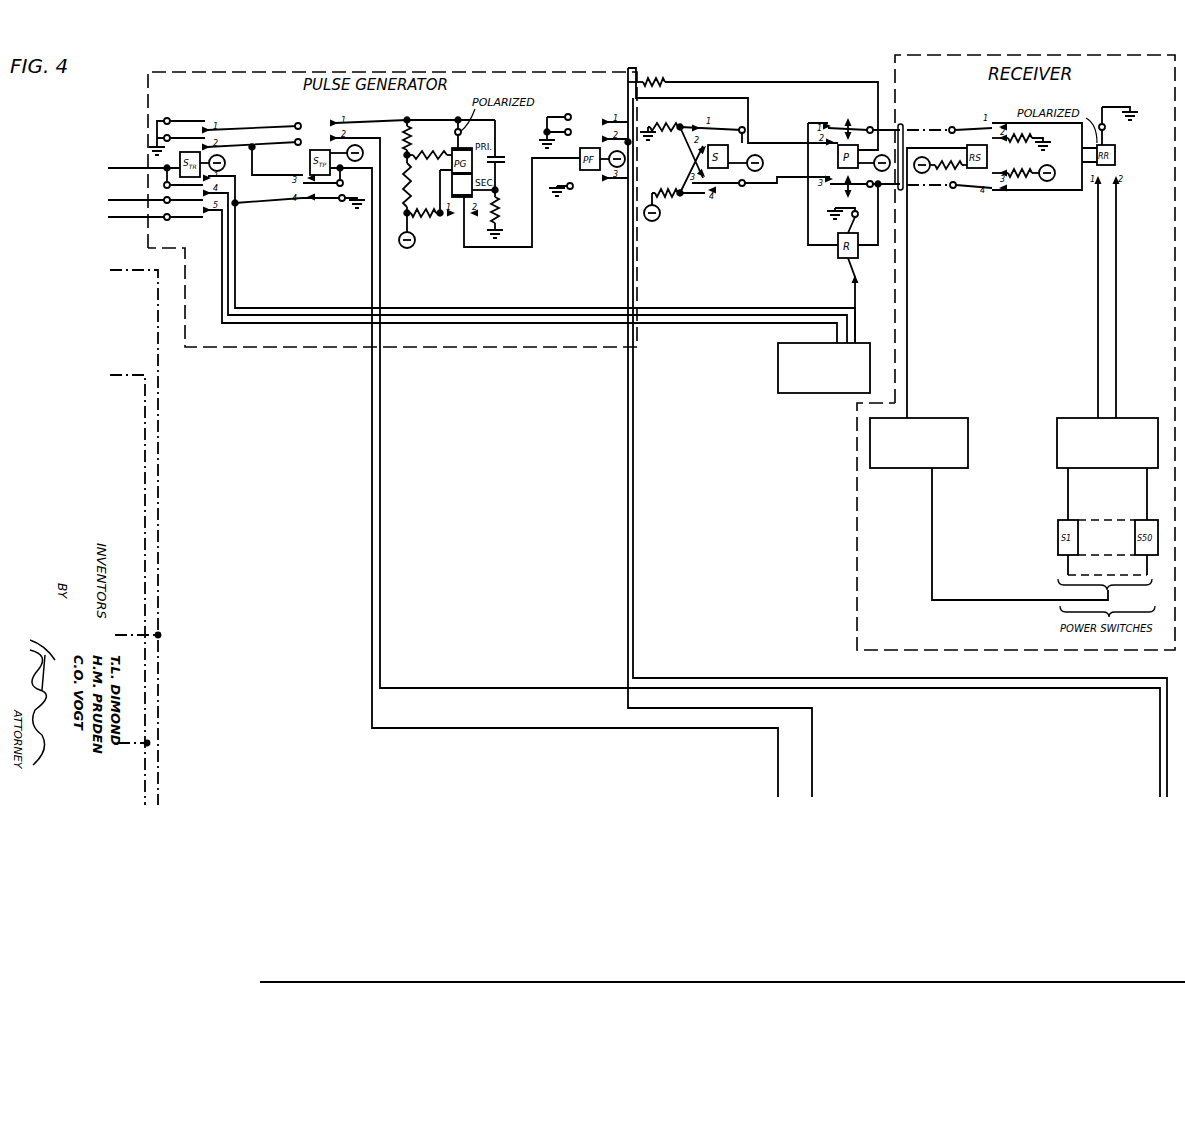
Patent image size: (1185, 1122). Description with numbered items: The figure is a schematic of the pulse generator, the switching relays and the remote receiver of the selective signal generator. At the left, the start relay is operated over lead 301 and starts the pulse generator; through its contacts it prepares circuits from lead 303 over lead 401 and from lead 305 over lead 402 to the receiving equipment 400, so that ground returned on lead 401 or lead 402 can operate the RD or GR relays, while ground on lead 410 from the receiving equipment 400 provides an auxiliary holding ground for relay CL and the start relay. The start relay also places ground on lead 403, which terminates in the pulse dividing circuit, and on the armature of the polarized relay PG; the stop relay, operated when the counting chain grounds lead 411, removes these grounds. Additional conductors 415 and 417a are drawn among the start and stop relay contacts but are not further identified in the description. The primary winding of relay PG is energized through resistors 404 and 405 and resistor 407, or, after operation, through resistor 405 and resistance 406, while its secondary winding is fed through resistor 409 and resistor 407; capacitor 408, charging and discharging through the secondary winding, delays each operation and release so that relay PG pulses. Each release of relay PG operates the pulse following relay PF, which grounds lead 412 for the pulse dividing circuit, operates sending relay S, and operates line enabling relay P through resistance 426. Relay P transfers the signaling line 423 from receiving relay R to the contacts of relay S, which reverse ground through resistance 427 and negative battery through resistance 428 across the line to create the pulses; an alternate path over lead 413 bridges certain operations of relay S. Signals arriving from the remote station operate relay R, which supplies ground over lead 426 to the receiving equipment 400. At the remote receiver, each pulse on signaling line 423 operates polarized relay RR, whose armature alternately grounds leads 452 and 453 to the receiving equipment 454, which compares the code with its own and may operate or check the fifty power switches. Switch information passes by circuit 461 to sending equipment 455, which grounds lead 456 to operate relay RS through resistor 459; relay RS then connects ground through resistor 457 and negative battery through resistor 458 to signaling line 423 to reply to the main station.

The lead 301 is at (140, 168).
The lead 303 is at (140, 200).
The lead 305 is at (144, 217).
The receiving equipment 400 is at (778, 371).
The lead 401 is at (290, 316).
The lead 402 is at (243, 324).
The lead 403 is at (382, 549).
The resistor 404 is at (406, 134).
The resistor 405 is at (411, 150).
The resistance 406 is at (406, 190).
The resistor 407 is at (416, 217).
The capacitor 408 is at (499, 157).
The resistor 409 is at (500, 205).
The lead 410 is at (340, 308).
The lead 411 is at (371, 549).
The lead 412 is at (627, 549).
The lead 413 is at (635, 549).
The conductor 415 is at (246, 204).
The conductor 417a is at (270, 175).
The signaling line 423 is at (902, 127).
The lead 426 is at (862, 298).
The resistance 427 is at (660, 121).
The resistance 428 is at (667, 205).
The lead 452 is at (1097, 370).
The lead 453 is at (1118, 370).
The receiving equipment 454 is at (1109, 468).
The sending equipment 455 is at (889, 468).
The lead 456 is at (909, 370).
The resistor 457 is at (1028, 144).
The resistor 458 is at (1020, 179).
The resistor 459 is at (952, 171).
The circuit 461 is at (933, 545).